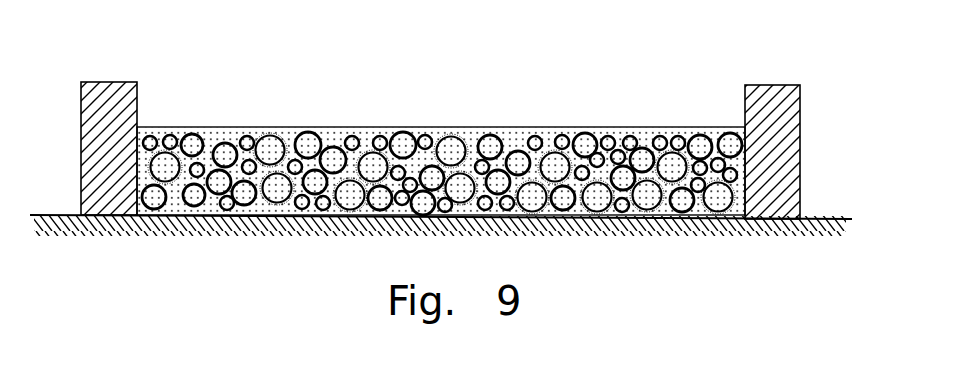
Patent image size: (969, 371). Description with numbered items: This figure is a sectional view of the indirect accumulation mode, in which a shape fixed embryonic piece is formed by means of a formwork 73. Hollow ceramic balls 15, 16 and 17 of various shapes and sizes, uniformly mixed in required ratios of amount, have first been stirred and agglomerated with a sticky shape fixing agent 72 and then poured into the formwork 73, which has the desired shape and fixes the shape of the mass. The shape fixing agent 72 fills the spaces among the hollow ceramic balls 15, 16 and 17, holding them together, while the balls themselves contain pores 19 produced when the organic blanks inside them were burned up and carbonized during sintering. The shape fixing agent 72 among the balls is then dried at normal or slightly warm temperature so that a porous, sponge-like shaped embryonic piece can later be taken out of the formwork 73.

The hollow ceramic ball 15 is at (269, 137).
The hollow ceramic ball 16 is at (314, 137).
The shape fixing agent 72 is at (519, 138).
The hollow ceramic ball 17 is at (563, 140).
The pore 19 is at (698, 145).
The formwork 73 is at (762, 93).